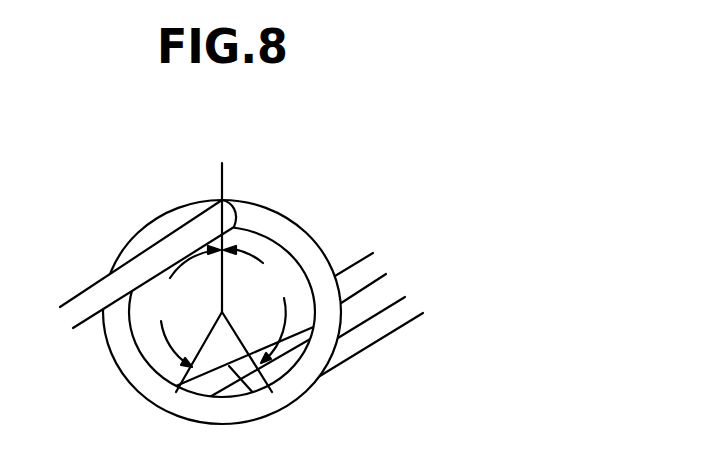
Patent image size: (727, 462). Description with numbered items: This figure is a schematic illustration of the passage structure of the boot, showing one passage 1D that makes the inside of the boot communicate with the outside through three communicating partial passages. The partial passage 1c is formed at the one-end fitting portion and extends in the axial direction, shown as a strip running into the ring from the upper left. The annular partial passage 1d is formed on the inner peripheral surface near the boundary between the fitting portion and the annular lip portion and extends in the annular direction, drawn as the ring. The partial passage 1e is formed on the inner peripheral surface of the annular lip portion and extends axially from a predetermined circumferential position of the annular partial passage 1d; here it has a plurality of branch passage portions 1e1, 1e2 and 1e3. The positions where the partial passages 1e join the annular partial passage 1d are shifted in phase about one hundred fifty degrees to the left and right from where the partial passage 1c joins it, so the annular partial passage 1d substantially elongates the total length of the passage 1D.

The passage 1D is at (321, 261).
The partial passage 1c is at (153, 257).
The annular partial passage 1d is at (300, 243).
The partial passage 1e is at (379, 324).
The branch passage portion 1e1 is at (392, 322).
The branch passage portion 1e2 is at (392, 292).
The branch passage portion 1e3 is at (368, 268).